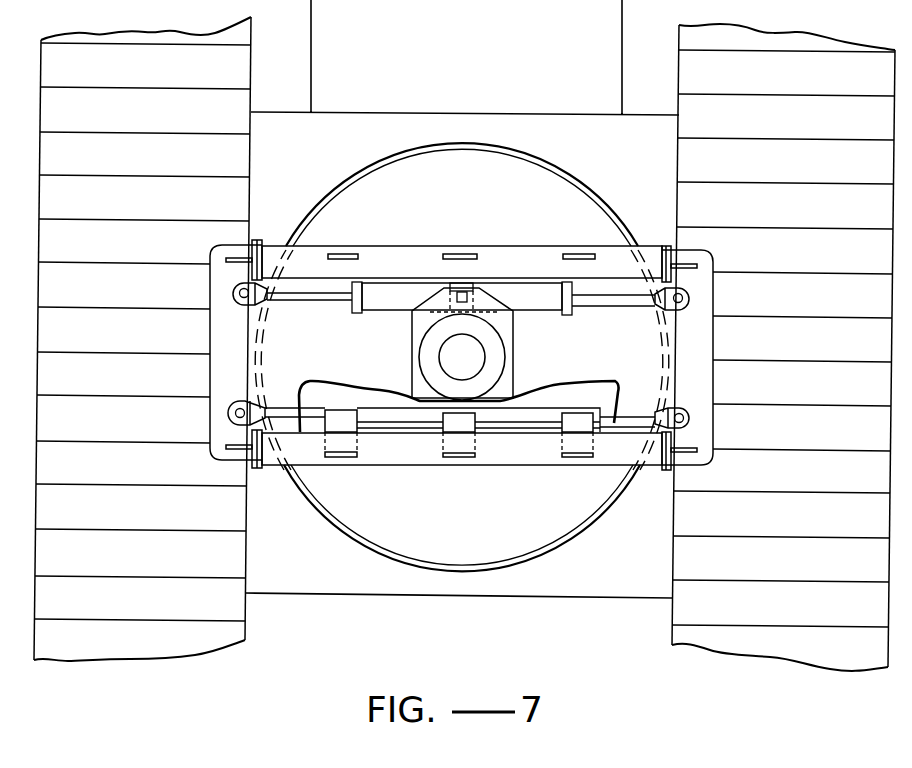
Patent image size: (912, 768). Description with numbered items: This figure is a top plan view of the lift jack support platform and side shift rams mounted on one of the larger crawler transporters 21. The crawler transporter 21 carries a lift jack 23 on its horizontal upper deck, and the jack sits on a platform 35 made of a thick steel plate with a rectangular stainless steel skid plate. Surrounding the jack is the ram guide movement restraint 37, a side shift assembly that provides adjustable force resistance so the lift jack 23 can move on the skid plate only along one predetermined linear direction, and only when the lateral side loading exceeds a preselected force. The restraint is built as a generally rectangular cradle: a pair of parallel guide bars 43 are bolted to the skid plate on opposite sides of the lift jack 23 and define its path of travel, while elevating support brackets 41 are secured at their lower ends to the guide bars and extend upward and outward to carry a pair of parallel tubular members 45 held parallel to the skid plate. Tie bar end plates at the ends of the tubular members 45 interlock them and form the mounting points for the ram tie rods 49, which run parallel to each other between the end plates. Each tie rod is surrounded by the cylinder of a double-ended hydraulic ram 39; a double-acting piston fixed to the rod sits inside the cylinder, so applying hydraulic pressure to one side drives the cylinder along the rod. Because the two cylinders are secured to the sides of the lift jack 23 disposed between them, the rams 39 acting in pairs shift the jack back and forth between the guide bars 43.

The crawler transporter 21 is at (548, 635).
The lift jack 23 is at (494, 341).
The platform 35 is at (593, 192).
The ram guide movement restraint 37 is at (476, 217).
The ram 39 is at (407, 296).
The support bracket 41 is at (450, 424).
The guide bar 43 is at (493, 418).
The tubular member 45 is at (538, 452).
The ram tie rod 49 is at (330, 297).